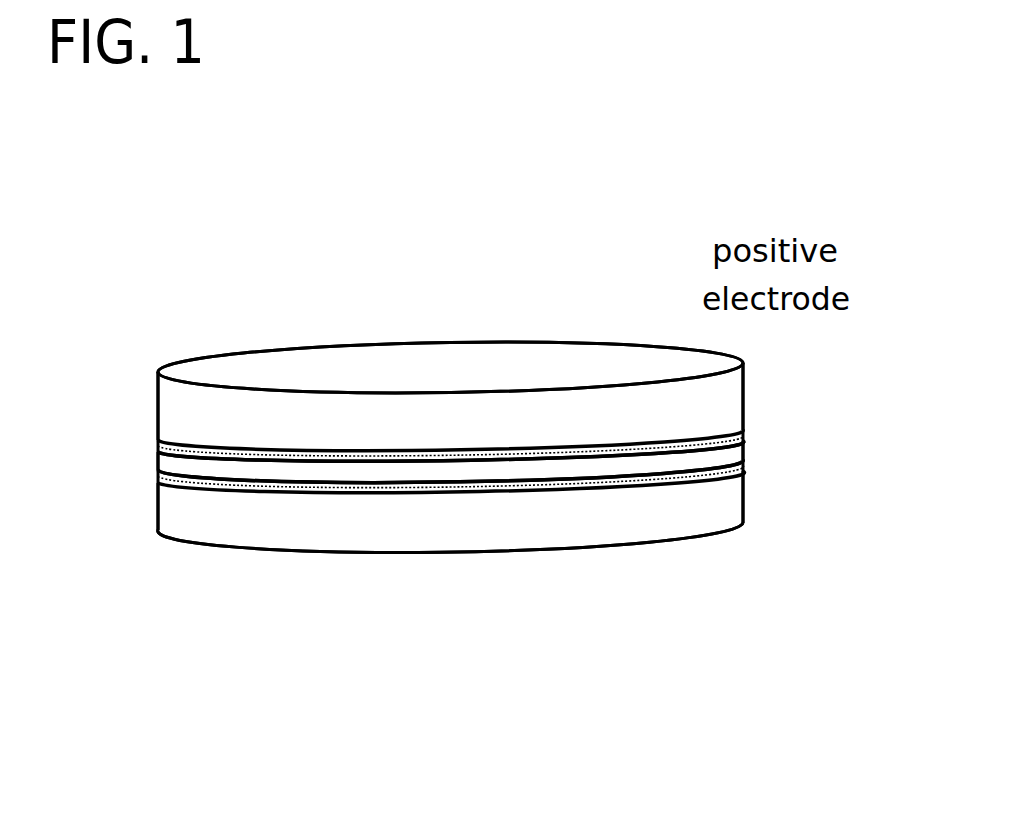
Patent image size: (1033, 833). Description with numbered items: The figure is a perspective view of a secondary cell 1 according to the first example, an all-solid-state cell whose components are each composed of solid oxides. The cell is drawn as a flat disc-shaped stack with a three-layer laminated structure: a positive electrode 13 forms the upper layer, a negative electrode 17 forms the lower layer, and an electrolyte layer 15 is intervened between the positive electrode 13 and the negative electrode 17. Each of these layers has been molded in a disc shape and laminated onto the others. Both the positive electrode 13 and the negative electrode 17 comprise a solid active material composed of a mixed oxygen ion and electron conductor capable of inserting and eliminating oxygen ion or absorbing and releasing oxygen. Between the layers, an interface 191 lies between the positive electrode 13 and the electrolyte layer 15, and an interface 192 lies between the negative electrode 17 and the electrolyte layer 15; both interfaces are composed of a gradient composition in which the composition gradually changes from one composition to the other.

The secondary cell 1 is at (502, 258).
The positive electrode 13 is at (650, 402).
The electrolyte layer 15 is at (688, 458).
The negative electrode 17 is at (525, 527).
The interface 191 is at (295, 450).
The interface 192 is at (348, 487).